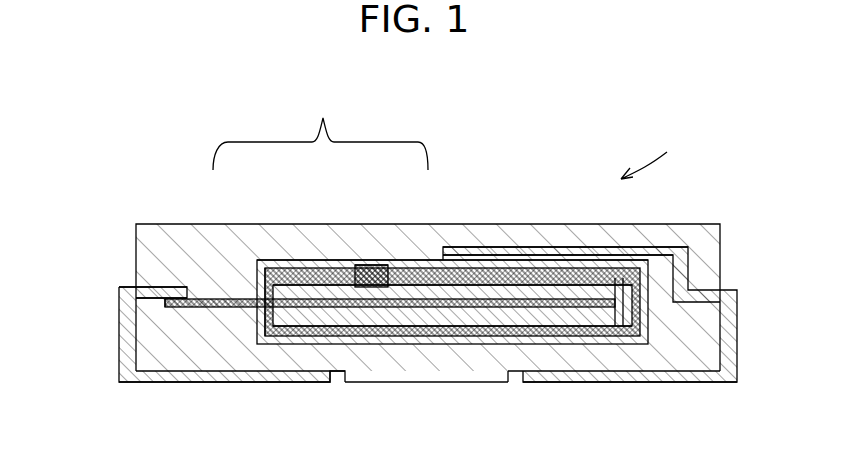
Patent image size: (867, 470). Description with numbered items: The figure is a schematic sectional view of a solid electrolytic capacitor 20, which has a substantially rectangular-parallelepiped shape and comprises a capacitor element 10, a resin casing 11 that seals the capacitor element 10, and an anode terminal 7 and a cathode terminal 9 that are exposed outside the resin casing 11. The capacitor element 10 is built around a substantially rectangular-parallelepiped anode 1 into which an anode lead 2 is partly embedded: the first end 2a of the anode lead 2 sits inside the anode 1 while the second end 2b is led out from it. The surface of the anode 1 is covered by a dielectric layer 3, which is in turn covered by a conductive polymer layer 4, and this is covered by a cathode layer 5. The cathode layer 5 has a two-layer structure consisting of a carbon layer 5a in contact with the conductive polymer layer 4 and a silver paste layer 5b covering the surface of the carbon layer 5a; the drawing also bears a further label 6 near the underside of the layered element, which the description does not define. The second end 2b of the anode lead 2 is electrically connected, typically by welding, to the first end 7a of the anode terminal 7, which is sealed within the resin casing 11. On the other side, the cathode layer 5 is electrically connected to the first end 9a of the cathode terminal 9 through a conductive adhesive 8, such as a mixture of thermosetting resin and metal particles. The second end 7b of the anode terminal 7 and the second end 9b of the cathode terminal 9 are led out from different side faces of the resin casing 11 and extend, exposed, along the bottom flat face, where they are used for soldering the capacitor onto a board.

The anode 1 is at (438, 285).
The anode lead 2 is at (395, 300).
The first end of anode lead 2a is at (450, 345).
The second end of anode lead 2b is at (197, 298).
The dielectric layer 3 is at (352, 268).
The conductive polymer layer 4 is at (308, 260).
The cathode layer 5 is at (353, 344).
The carbon layer 5a is at (292, 262).
The silver paste layer 5b is at (277, 266).
The lower layer 6 is at (388, 340).
The anode terminal 7 is at (120, 318).
The first end of anode terminal 7a is at (135, 290).
The second end of anode terminal 7b is at (312, 382).
The conductive adhesive 8 is at (443, 247).
The cathode terminal 9 is at (737, 311).
The first end of cathode terminal 9a is at (577, 247).
The second end of cathode terminal 9b is at (665, 382).
The capacitor element 10 is at (323, 118).
The resin casing 11 is at (150, 240).
The solid electrolytic capacitor 20 is at (648, 153).